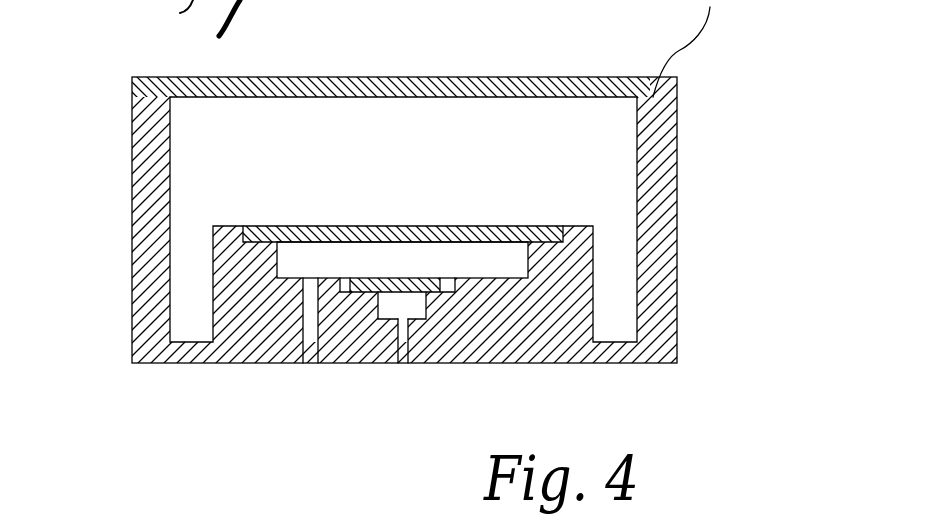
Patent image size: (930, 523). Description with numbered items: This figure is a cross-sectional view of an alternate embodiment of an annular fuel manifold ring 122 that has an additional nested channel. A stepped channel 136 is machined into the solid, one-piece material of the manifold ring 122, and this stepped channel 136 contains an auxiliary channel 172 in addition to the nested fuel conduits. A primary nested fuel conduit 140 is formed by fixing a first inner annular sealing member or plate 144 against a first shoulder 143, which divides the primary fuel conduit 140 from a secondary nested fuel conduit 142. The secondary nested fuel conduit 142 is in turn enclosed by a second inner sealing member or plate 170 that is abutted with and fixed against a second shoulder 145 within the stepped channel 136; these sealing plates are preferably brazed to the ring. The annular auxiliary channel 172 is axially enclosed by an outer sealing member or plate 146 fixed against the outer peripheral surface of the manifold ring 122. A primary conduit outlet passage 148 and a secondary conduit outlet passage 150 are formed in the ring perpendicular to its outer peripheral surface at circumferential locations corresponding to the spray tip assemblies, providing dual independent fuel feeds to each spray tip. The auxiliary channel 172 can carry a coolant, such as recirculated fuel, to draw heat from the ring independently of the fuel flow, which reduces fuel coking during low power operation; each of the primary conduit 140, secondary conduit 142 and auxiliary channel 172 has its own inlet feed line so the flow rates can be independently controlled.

The annular fuel manifold ring 122 is at (655, 178).
The stepped channel 136 is at (382, 302).
The primary nested fuel conduit 140 is at (417, 305).
The secondary nested fuel conduit 142 is at (380, 257).
The first shoulder 143 is at (440, 285).
The first inner annular sealing member or plate 144 is at (395, 278).
The second shoulder 145 is at (263, 227).
The outer sealing member or plate 146 is at (480, 78).
The primary conduit outlet passage 148 is at (402, 347).
The secondary conduit outlet passage 150 is at (312, 310).
The second inner sealing member or plate 170 is at (467, 232).
The auxiliary channel 172 is at (573, 150).